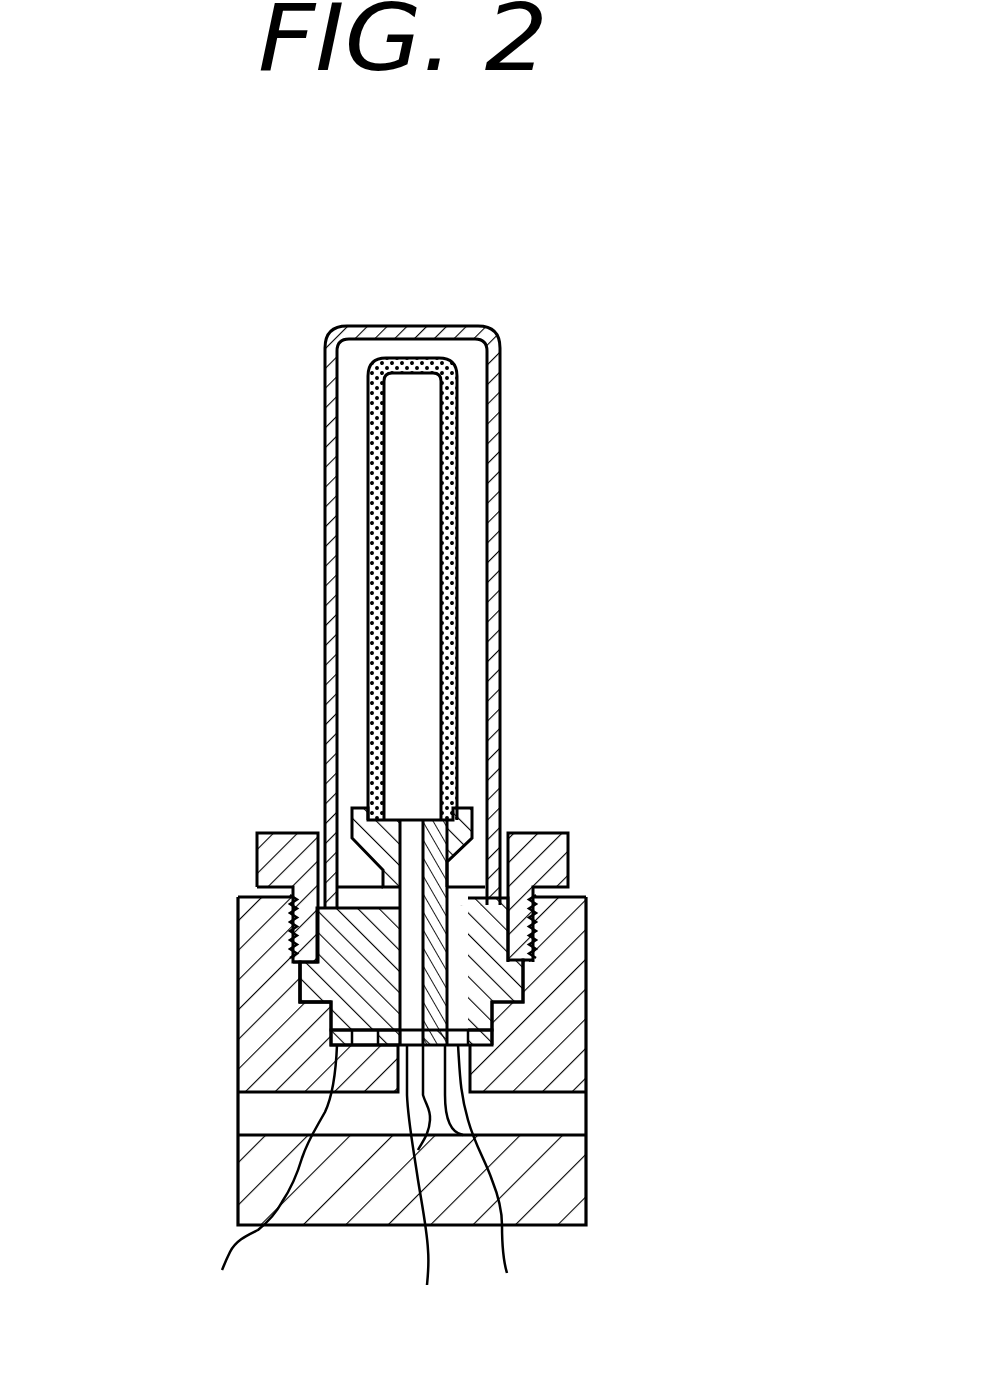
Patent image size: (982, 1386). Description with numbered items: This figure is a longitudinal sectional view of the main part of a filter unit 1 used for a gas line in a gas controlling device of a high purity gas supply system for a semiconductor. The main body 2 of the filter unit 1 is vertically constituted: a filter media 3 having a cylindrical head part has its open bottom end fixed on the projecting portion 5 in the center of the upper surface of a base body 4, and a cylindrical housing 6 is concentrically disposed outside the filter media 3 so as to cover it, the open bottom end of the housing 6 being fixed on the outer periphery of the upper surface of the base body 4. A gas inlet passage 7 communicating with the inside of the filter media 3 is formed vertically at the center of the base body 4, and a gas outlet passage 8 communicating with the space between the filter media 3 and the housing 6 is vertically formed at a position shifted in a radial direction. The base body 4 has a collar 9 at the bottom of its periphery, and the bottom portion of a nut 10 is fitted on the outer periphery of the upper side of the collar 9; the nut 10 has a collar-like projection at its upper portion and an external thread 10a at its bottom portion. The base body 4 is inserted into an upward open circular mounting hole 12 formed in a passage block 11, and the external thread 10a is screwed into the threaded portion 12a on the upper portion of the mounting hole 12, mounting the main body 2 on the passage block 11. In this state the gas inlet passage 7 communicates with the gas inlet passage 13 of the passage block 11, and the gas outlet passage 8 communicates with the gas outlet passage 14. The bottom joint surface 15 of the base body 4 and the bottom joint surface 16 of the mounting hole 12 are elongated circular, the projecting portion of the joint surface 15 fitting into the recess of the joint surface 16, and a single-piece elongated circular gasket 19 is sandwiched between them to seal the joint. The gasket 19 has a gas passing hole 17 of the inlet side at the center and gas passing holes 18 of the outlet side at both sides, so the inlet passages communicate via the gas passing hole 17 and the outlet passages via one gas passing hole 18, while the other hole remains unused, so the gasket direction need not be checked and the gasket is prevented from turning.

The filter unit 1 is at (633, 300).
The main body 2 is at (543, 722).
The filter media 3 is at (368, 562).
The base body 4 is at (373, 968).
The projecting portion 5 is at (337, 828).
The housing 6 is at (503, 487).
The gas inlet passage 7 is at (290, 937).
The gas outlet passage 8 is at (455, 970).
The collar 9 is at (297, 1020).
The nut 10 is at (568, 842).
The external thread 10a is at (292, 913).
The passage block 11 is at (555, 1230).
The mounting hole 12 is at (525, 985).
The threaded portion 12a is at (535, 940).
The gas inlet passage 13 is at (352, 1128).
The gas outlet passage 14 is at (520, 1122).
The bottom joint surface 15 is at (335, 1047).
The bottom joint surface 16 is at (331, 1047).
The gas passing hole 17 is at (423, 1082).
The gas passing holes 18 is at (358, 1187).
The gasket 19 is at (492, 1035).